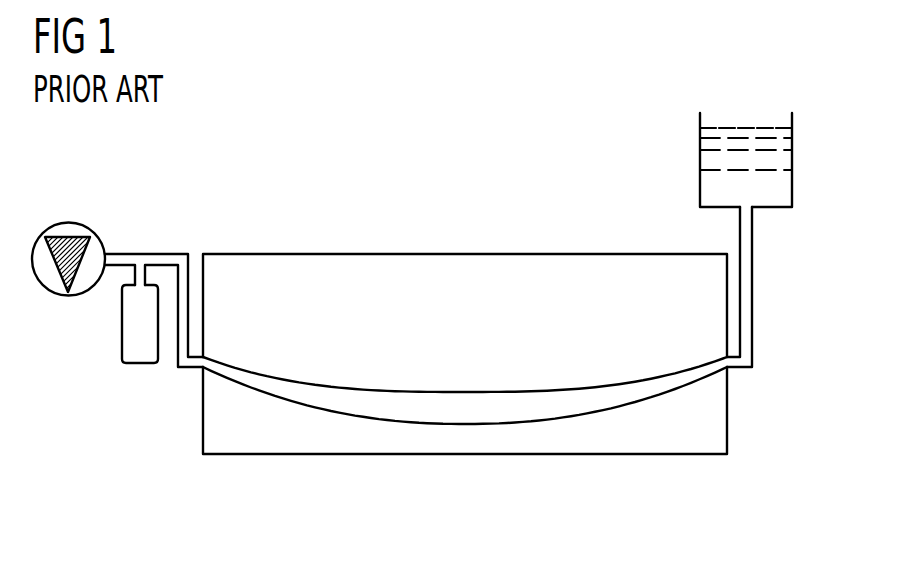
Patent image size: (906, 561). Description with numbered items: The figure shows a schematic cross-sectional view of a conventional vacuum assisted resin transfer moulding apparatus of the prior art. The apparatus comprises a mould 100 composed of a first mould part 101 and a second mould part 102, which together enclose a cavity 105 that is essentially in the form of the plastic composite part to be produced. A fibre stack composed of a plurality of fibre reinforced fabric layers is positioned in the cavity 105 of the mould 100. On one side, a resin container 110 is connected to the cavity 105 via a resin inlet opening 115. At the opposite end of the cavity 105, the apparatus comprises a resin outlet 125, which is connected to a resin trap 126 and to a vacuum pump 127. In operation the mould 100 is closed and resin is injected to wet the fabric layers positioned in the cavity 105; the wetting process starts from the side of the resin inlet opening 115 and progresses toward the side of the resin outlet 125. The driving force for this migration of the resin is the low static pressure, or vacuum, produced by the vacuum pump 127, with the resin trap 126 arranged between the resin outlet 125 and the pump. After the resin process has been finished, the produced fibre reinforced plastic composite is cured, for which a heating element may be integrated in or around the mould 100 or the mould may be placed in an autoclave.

The mould 100 is at (519, 212).
The first mould part 101 is at (439, 268).
The second mould part 102 is at (467, 443).
The cavity 105 is at (521, 402).
The resin container 110 is at (708, 160).
The resin inlet opening 115 is at (730, 363).
The resin outlet 125 is at (202, 360).
The resin trap 126 is at (133, 347).
The vacuum pump 127 is at (67, 222).